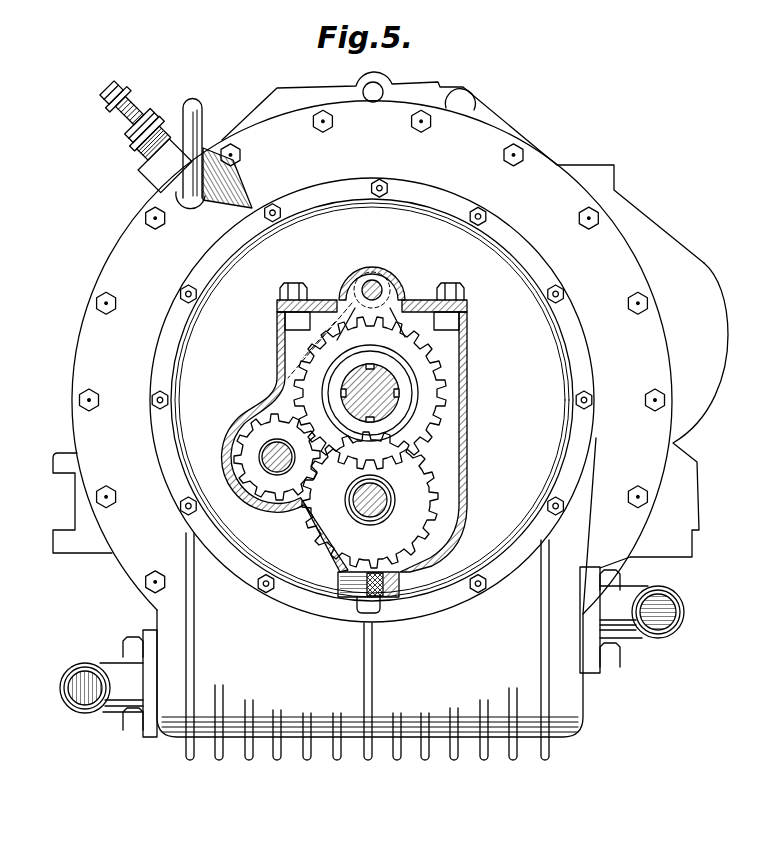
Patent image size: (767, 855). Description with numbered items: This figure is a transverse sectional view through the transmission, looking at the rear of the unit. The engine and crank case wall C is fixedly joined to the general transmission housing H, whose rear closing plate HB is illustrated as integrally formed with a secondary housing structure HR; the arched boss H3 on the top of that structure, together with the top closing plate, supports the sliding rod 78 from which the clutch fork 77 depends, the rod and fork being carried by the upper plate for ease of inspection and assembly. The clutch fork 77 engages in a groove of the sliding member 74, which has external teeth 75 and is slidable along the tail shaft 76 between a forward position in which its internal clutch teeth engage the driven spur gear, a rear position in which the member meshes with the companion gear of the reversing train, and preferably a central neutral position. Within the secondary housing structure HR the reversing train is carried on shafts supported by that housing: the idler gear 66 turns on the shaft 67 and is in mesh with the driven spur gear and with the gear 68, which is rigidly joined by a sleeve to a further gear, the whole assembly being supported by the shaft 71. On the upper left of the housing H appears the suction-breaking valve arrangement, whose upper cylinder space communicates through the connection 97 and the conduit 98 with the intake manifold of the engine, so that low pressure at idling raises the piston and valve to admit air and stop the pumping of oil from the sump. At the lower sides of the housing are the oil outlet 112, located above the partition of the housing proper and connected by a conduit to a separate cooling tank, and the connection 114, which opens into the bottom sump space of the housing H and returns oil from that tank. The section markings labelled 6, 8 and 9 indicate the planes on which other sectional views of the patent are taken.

The transmission housing H is at (617, 233).
The engine and crank case wall C is at (702, 264).
The rear closing plate HB is at (550, 353).
The secondary housing structure HR is at (467, 380).
The arched bearing boss H3 is at (381, 263).
The sliding rod 78 is at (366, 287).
The clutch fork 77 is at (381, 310).
The external teeth 75 is at (436, 379).
The tail shaft 76 is at (378, 404).
The sliding member 74 is at (327, 403).
The gear 68 is at (241, 433).
The shaft 71 is at (273, 467).
The idler gear 66 is at (413, 503).
The shaft 67 is at (387, 495).
The connection 97 is at (197, 197).
The conduit 98 is at (187, 186).
The oil outlet 112 is at (660, 597).
The connection 114 is at (78, 670).
The section line 6 is at (104, 87).
The section line 8 is at (370, 252).
The section line 9 is at (385, 318).